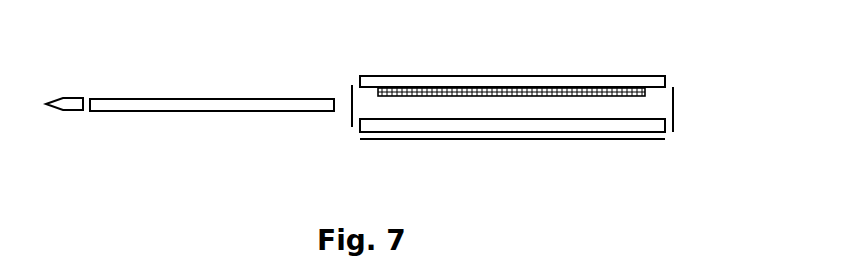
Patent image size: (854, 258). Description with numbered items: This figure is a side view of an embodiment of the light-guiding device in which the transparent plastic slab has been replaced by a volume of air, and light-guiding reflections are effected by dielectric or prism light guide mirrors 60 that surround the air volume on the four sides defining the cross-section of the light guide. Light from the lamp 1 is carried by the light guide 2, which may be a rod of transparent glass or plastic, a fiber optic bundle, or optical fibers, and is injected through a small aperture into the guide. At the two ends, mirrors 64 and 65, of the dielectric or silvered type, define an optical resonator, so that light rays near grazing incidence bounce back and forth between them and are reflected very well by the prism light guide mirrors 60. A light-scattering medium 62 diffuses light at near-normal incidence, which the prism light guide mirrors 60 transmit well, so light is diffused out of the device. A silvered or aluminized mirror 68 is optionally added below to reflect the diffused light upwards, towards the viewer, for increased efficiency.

The lamp 1 is at (66, 98).
The light guide 2 is at (133, 98).
The prism light guide mirrors 60 is at (395, 77).
The light-scattering medium 62 is at (523, 90).
The mirror 64 is at (673, 107).
The mirror 65 is at (352, 120).
The silvered or aluminized mirror 68 is at (498, 139).